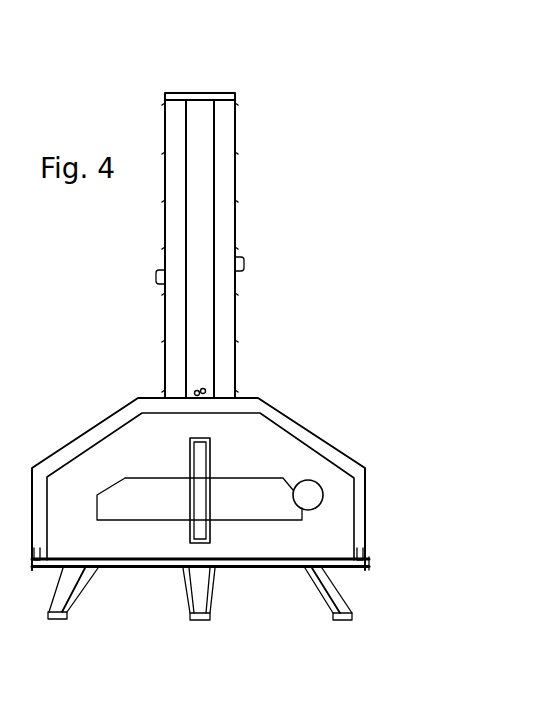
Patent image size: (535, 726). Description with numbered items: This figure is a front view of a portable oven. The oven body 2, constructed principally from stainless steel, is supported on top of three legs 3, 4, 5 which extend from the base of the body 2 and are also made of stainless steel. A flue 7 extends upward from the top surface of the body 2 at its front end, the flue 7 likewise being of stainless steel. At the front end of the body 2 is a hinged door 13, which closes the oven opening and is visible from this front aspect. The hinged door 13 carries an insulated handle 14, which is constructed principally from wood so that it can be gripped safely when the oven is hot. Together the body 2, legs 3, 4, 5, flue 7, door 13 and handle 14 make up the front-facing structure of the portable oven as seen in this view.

The oven body 2 is at (349, 455).
The leg 3 is at (52, 616).
The leg 4 is at (350, 618).
The leg 5 is at (206, 619).
The flue 7 is at (236, 184).
The hinged door 13 is at (96, 467).
The insulated handle 14 is at (212, 457).